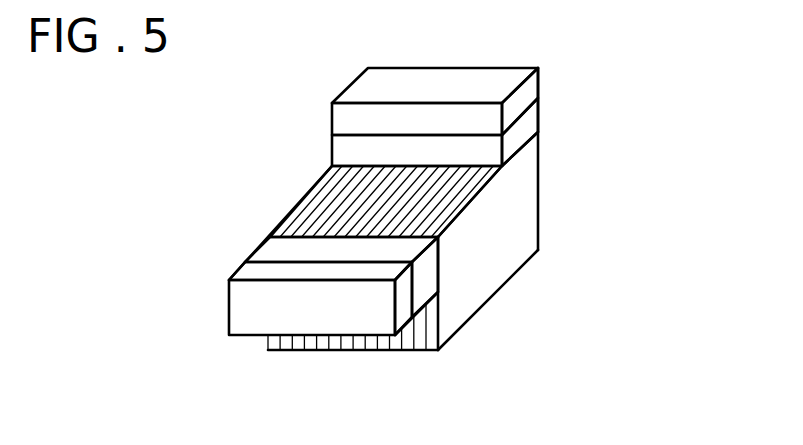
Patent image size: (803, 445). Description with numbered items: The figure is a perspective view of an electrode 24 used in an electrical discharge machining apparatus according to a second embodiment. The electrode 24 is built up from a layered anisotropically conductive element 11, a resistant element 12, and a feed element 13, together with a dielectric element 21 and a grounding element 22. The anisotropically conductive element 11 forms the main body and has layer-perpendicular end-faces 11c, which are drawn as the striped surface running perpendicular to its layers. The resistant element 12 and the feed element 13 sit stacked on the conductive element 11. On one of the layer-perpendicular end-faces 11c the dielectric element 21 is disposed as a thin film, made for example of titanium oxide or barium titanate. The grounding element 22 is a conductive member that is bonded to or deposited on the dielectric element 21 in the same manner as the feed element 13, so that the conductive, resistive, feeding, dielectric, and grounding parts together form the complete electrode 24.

The layered anisotropically conductive element 11 is at (415, 243).
The layer-perpendicular end-face 11c is at (420, 340).
The resistant element 12 is at (528, 123).
The feed element 13 is at (528, 96).
The dielectric element 21 is at (280, 250).
The grounding element 22 is at (262, 275).
The electrode 24 is at (447, 237).